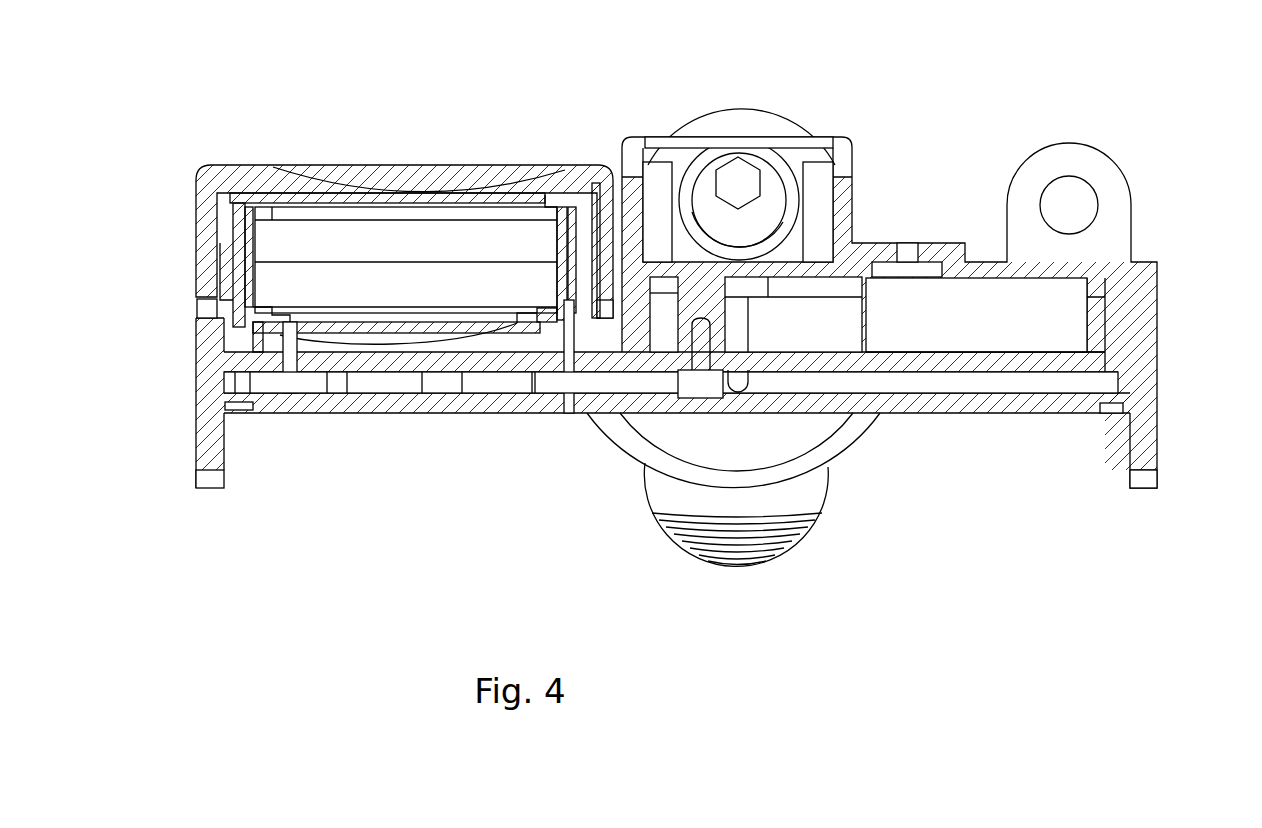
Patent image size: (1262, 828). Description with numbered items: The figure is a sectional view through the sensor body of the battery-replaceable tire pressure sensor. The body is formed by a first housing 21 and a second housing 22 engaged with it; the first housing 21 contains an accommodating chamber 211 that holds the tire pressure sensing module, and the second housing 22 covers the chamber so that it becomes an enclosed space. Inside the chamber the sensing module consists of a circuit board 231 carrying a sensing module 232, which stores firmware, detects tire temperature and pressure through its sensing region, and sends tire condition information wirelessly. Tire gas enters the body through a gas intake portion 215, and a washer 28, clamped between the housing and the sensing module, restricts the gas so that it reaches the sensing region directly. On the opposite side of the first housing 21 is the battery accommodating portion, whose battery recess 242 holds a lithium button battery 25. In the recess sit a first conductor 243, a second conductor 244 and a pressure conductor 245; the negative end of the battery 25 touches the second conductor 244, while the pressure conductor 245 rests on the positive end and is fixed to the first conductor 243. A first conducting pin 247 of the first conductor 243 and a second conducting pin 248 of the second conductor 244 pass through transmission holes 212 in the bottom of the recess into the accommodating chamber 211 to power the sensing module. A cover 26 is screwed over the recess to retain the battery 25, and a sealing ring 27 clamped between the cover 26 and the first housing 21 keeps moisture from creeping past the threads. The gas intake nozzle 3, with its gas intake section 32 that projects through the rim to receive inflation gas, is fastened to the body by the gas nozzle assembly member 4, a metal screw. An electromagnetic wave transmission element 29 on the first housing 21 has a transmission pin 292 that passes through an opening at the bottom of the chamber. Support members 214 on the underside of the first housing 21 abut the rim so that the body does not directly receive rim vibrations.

The first housing 21 is at (1150, 303).
The accommodating chamber 211 is at (822, 338).
The transmission holes 212 is at (228, 367).
The support member 214 is at (208, 442).
The gas intake portion 215 is at (910, 243).
The second housing 22 is at (1044, 400).
The circuit board 231 is at (988, 365).
The sensing module 232 is at (927, 337).
The battery recess 242 is at (548, 198).
The first conductor 243 is at (540, 375).
The second conductor 244 is at (388, 345).
The pressure conductor 245 is at (445, 197).
The first conducting pin 247 is at (568, 413).
The second conducting pin 248 is at (288, 397).
The battery 25 is at (318, 230).
The cover 26 is at (262, 167).
The sealing ring 27 is at (200, 310).
The washer 28 is at (932, 263).
The electromagnetic wave transmission element 29 is at (792, 162).
The transmission pin 292 is at (740, 388).
The gas intake nozzle 3 is at (647, 493).
The gas intake section 32 is at (743, 567).
The gas nozzle assembly member 4 is at (717, 152).